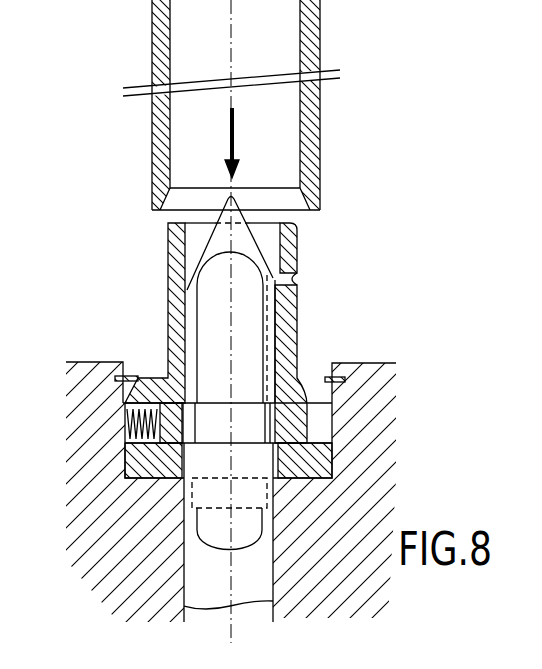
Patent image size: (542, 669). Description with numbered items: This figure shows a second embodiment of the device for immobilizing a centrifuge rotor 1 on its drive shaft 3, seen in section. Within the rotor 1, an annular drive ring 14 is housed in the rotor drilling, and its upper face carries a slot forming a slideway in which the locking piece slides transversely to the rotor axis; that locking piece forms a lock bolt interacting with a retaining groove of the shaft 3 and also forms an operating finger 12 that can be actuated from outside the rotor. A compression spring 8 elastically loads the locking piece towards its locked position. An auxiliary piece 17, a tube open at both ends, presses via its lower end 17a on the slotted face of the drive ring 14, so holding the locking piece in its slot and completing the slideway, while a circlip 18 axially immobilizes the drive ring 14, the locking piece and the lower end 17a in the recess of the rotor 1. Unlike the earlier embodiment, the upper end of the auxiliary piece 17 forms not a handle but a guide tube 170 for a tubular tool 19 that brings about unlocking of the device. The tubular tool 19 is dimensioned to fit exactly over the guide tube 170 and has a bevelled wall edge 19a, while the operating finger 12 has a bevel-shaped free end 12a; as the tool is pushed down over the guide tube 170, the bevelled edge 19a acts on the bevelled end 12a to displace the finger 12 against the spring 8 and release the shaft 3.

The tubular tool 19 is at (152, 52).
The bevelled wall edge 19a is at (153, 203).
The auxiliary piece 17 is at (168, 290).
The lower end of auxiliary piece 17a is at (140, 376).
The guide tube 170 is at (295, 245).
The free end of operating finger 12a is at (288, 297).
The operating finger 12 is at (297, 337).
The circlip 18 is at (345, 386).
The rotor 1 is at (355, 433).
The drive ring 14 is at (322, 463).
The compression spring 8 is at (125, 425).
The shaft 3 is at (245, 588).